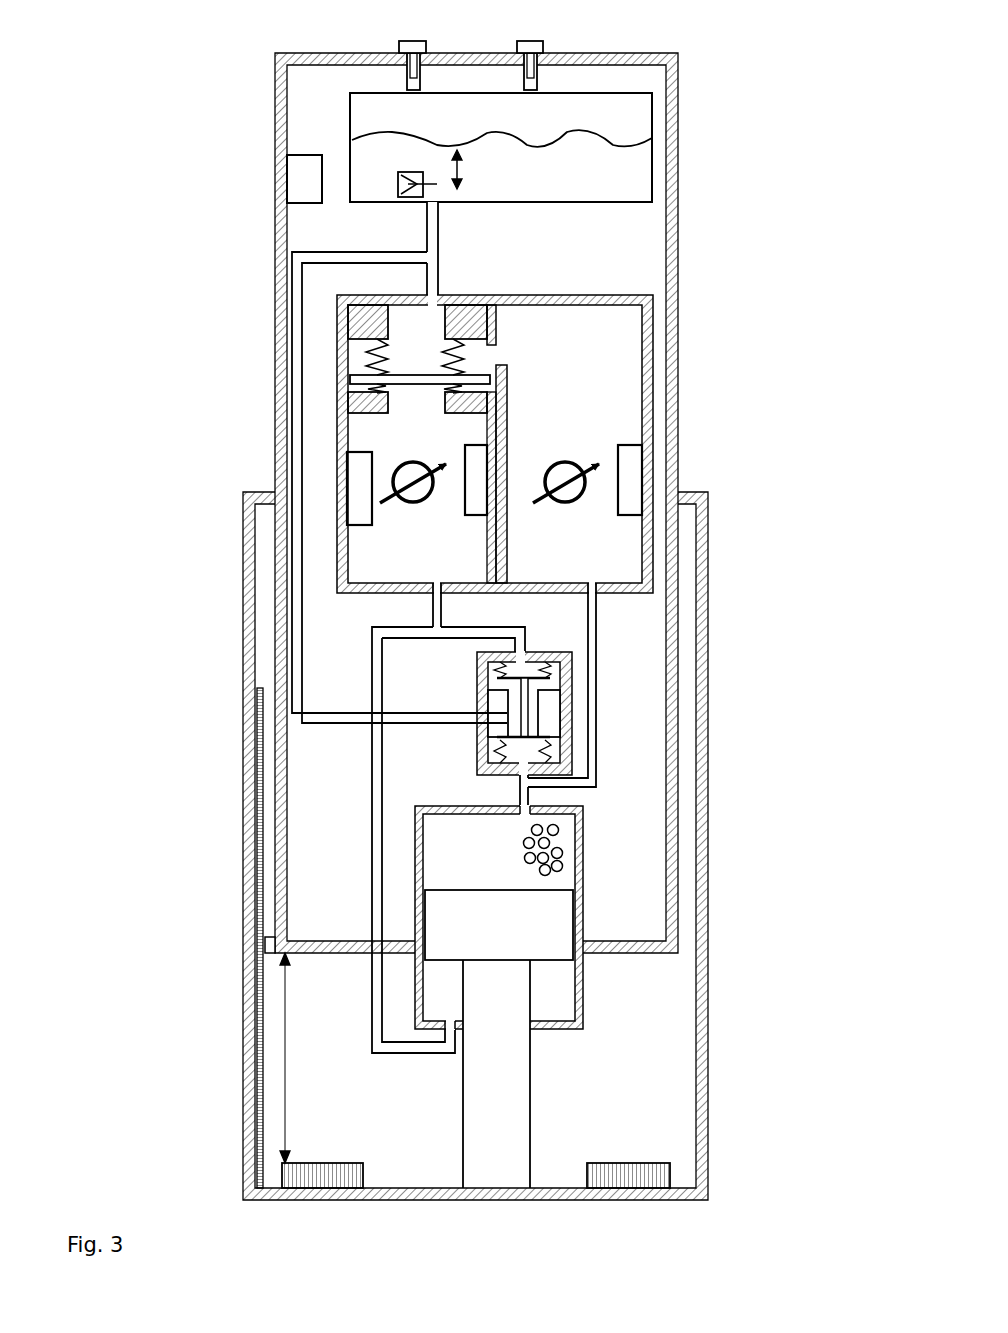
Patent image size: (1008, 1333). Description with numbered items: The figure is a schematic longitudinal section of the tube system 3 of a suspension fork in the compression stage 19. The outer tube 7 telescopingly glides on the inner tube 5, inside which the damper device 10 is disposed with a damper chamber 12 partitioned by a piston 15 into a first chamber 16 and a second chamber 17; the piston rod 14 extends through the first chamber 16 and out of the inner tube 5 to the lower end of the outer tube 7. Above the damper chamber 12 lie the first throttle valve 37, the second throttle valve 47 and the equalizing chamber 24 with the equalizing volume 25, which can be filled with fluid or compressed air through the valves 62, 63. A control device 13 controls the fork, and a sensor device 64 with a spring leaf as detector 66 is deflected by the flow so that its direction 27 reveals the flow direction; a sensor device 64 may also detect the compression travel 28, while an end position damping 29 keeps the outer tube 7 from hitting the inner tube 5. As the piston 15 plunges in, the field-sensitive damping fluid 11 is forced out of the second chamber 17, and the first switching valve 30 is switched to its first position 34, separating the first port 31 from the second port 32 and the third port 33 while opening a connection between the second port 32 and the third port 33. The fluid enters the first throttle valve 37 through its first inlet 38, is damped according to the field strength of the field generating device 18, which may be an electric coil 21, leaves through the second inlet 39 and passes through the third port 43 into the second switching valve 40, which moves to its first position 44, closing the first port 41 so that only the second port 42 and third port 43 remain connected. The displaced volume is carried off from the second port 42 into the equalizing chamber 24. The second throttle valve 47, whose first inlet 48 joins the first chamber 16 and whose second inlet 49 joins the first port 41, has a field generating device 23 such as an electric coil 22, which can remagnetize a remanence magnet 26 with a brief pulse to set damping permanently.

The tube system 3 is at (157, 92).
The compression stage 19 is at (127, 165).
The equalizing chamber 24 is at (350, 121).
The equalizing volume 25 is at (620, 115).
The valve 62 is at (408, 45).
The valve 63 is at (527, 45).
The control device 13 is at (300, 178).
The detector 66 is at (437, 180).
The direction 27 is at (463, 170).
The third port 43 is at (480, 350).
The sensor device 64 is at (398, 195).
The second switching valve 40 is at (423, 307).
The second port 42 is at (345, 327).
The first position 44 is at (325, 364).
The first port 41 is at (340, 398).
The second inlet 49 is at (412, 395).
The second inlet 39 is at (507, 350).
The remanence magnet 26 is at (355, 507).
The second throttle valve 47 is at (393, 476).
The electric coil 22 is at (465, 492).
The field generating device 23 is at (475, 517).
The electric coil 21 is at (627, 452).
The field generating device 18 is at (632, 468).
The first throttle valve 37 is at (648, 475).
The first inlet 48 is at (433, 575).
The first inlet 38 is at (592, 575).
The second port 32 is at (525, 645).
The first switching valve 30 is at (570, 713).
The first position 34 is at (577, 693).
The third port 33 is at (470, 707).
The first port 31 is at (518, 790).
The damper device 10 is at (415, 808).
The field-sensitive damping fluid 11 is at (525, 850).
The damper chamber 12 is at (430, 845).
The second chamber 17 is at (433, 878).
The piston 15 is at (435, 905).
The first chamber 16 is at (435, 985).
The piston rod 14 is at (485, 1082).
The end position damping 29 is at (298, 1180).
The compression travel 28 is at (288, 1103).
The inner tube 5 is at (678, 245).
The outer tube 7 is at (708, 790).